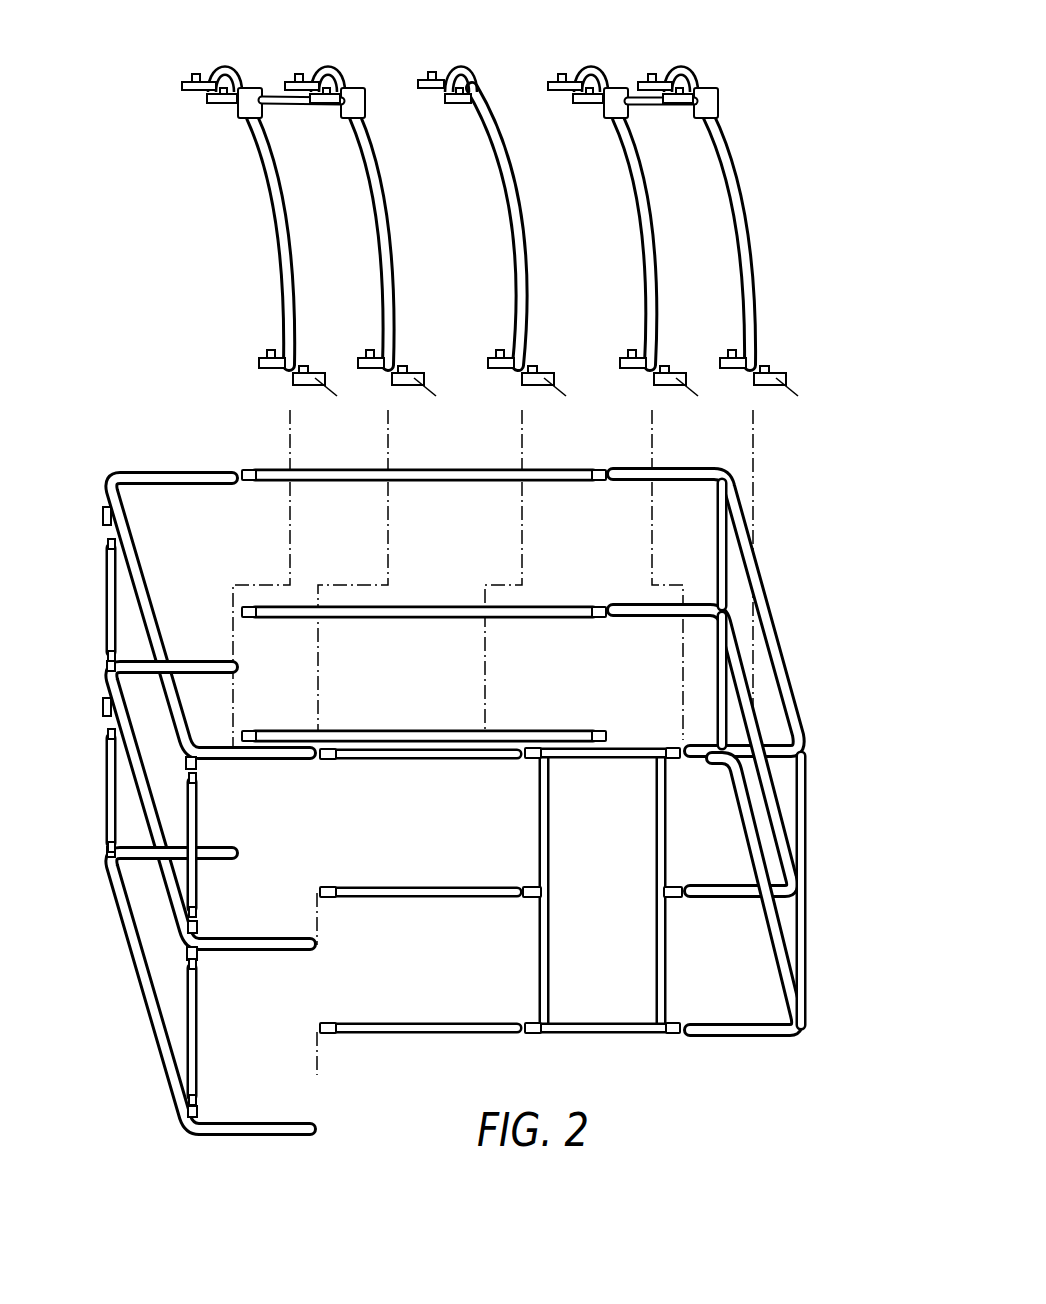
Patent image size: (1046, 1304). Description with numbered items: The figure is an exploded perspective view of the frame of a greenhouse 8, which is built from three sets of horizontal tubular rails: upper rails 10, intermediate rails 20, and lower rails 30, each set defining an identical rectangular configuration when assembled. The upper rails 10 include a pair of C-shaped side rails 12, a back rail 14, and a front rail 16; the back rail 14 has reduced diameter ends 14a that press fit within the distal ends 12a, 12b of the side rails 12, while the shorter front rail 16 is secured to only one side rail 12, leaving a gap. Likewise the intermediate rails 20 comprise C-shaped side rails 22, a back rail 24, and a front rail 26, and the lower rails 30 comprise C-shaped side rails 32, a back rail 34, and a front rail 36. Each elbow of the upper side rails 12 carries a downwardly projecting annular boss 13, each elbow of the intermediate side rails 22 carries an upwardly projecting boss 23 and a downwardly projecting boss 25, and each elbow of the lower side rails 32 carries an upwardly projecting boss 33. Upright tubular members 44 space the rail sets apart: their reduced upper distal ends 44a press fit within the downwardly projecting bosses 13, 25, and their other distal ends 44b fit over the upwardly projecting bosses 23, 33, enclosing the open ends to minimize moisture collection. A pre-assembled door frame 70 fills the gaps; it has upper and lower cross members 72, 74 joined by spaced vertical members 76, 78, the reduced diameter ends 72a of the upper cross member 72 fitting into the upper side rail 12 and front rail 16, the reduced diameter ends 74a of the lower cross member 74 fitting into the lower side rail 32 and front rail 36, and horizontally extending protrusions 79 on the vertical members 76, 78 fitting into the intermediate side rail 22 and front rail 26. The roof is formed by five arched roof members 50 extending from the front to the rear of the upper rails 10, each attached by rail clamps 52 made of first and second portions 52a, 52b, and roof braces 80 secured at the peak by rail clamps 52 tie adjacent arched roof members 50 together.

The greenhouse 8 is at (120, 440).
The upper rails 10 is at (458, 617).
The C-shaped side rails 12 is at (135, 553).
The distal end 12a is at (233, 484).
The distal end 12b is at (619, 483).
The downwardly projecting annular boss 13 is at (104, 512).
The back rail 14 is at (443, 478).
The reduced diameter ends 14a is at (244, 468).
The front rail 16 is at (433, 758).
The intermediate rails 20 is at (471, 795).
The C-shaped side rails 22 is at (126, 718).
The upwardly projecting annular boss 23 is at (108, 668).
The back rail 24 is at (441, 616).
The downwardly projecting annular boss 25 is at (105, 710).
The front rail 26 is at (407, 896).
The lower rails 30 is at (465, 905).
The C-shaped side rails 32 is at (130, 933).
The upwardly projecting annular boss 33 is at (108, 868).
The back rail 34 is at (413, 731).
The front rail 36 is at (433, 1018).
The upright tubular members 44 is at (445, 794).
The upper distal ends 44a is at (106, 543).
The other distal ends 44b is at (110, 650).
The arched roof members 50 is at (293, 258).
The rail clamp 52 is at (362, 107).
The first portion 52a is at (190, 78).
The second portion 52b is at (218, 104).
The door frame 70 is at (638, 745).
The upper cross member 72 is at (611, 892).
The reduced diameter ends 72a is at (532, 760).
The lower cross member 74 is at (584, 1022).
The reduced diameter ends 74a is at (531, 1036).
The vertical member 76 is at (549, 915).
The vertical member 78 is at (657, 857).
The horizontally extending protrusions 79 is at (530, 886).
The roof braces 80 is at (267, 96).